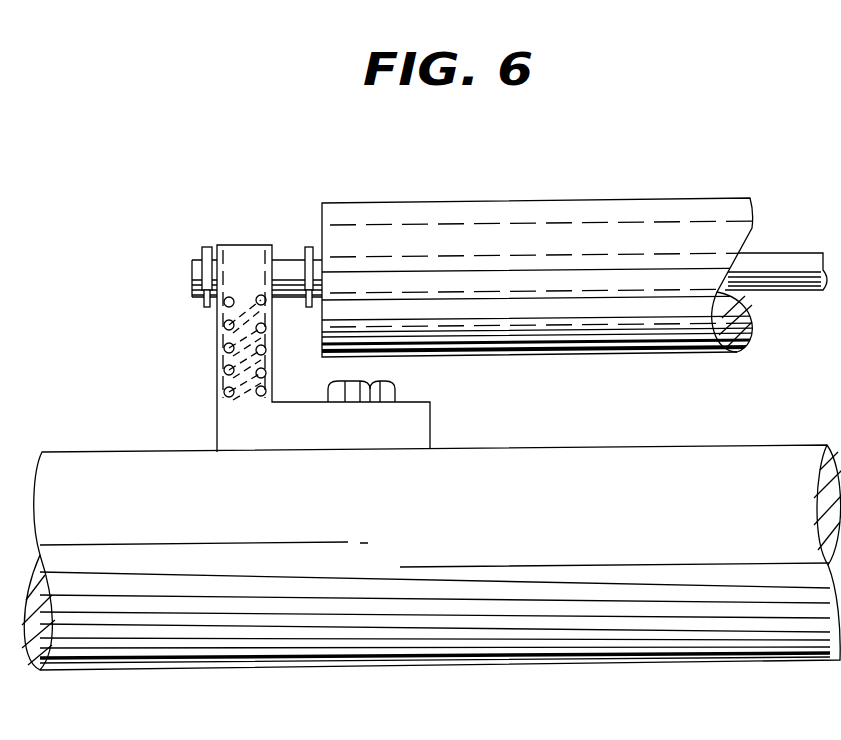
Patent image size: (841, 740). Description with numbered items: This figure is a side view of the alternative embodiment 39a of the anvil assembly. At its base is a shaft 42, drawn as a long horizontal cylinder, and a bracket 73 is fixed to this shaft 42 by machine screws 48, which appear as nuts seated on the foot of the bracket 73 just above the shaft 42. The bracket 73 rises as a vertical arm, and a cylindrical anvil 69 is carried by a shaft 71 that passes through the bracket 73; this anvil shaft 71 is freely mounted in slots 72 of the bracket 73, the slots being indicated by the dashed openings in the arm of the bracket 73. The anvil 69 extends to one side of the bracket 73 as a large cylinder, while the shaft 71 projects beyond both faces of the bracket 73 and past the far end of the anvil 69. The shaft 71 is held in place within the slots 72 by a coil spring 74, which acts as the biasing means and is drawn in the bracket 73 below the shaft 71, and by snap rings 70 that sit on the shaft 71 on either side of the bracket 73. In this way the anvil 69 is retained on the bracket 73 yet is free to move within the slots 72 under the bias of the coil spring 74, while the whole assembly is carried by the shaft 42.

The alternative embodiment 39a is at (541, 238).
The shaft 42 is at (417, 558).
The machine screws 48 is at (384, 386).
The cylindrical anvil 69 is at (378, 203).
The snap rings 70 is at (205, 247).
The shaft 71 is at (191, 272).
The slots 72 is at (226, 318).
The bracket 73 is at (217, 418).
The coil spring 74 is at (229, 377).